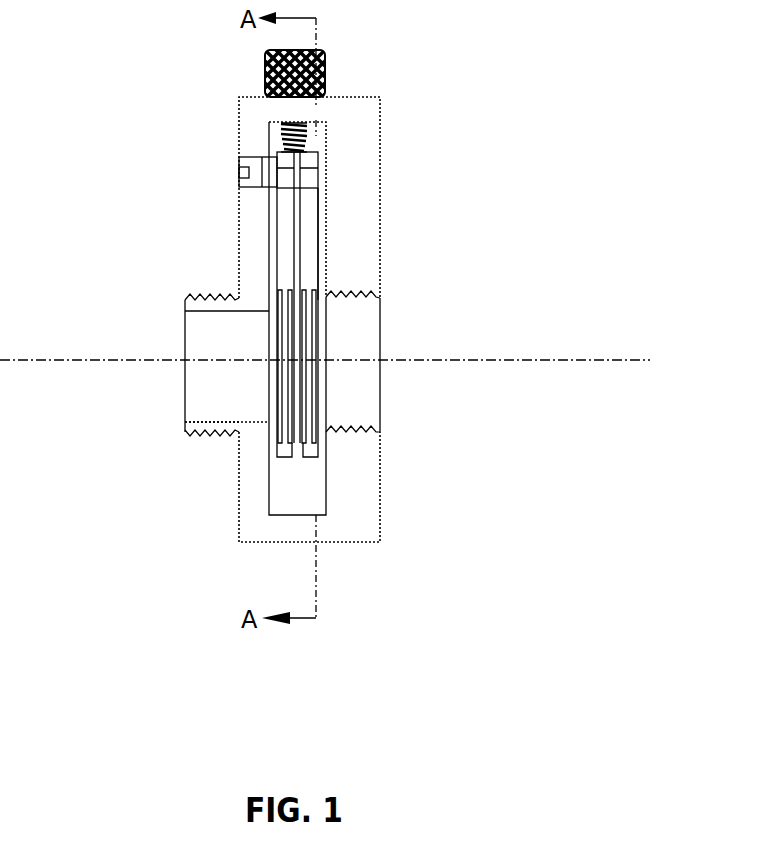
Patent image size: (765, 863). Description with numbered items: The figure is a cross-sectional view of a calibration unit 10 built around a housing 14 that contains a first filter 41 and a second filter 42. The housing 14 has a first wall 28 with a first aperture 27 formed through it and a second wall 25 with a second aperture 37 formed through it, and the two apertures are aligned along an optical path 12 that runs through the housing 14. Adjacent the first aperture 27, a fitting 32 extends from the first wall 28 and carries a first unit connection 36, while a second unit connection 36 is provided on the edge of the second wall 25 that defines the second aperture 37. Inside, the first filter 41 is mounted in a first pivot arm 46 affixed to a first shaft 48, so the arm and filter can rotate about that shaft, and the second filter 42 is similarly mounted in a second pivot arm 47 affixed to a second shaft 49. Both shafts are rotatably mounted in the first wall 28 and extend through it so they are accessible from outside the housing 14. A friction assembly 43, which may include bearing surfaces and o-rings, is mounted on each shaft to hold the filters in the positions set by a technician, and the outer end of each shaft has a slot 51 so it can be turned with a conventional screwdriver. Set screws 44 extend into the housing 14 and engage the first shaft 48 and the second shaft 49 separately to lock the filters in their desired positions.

The calibration unit 10 is at (556, 81).
The optical path 12 is at (572, 358).
The housing 14 is at (380, 97).
The second wall 25 is at (380, 235).
The first aperture 27 is at (168, 379).
The first wall 28 is at (240, 510).
The fitting 32 is at (233, 432).
The unit connection 36 is at (365, 296).
The second aperture 37 is at (394, 379).
The first filter 41 is at (313, 399).
The second filter 42 is at (282, 333).
The friction assembly 43 is at (263, 160).
The set screw 44 is at (270, 52).
The first pivot arm 46 is at (318, 200).
The second pivot arm 47 is at (277, 269).
The first shaft 48 is at (300, 172).
The second shaft 49 is at (255, 181).
The slot 51 is at (243, 170).